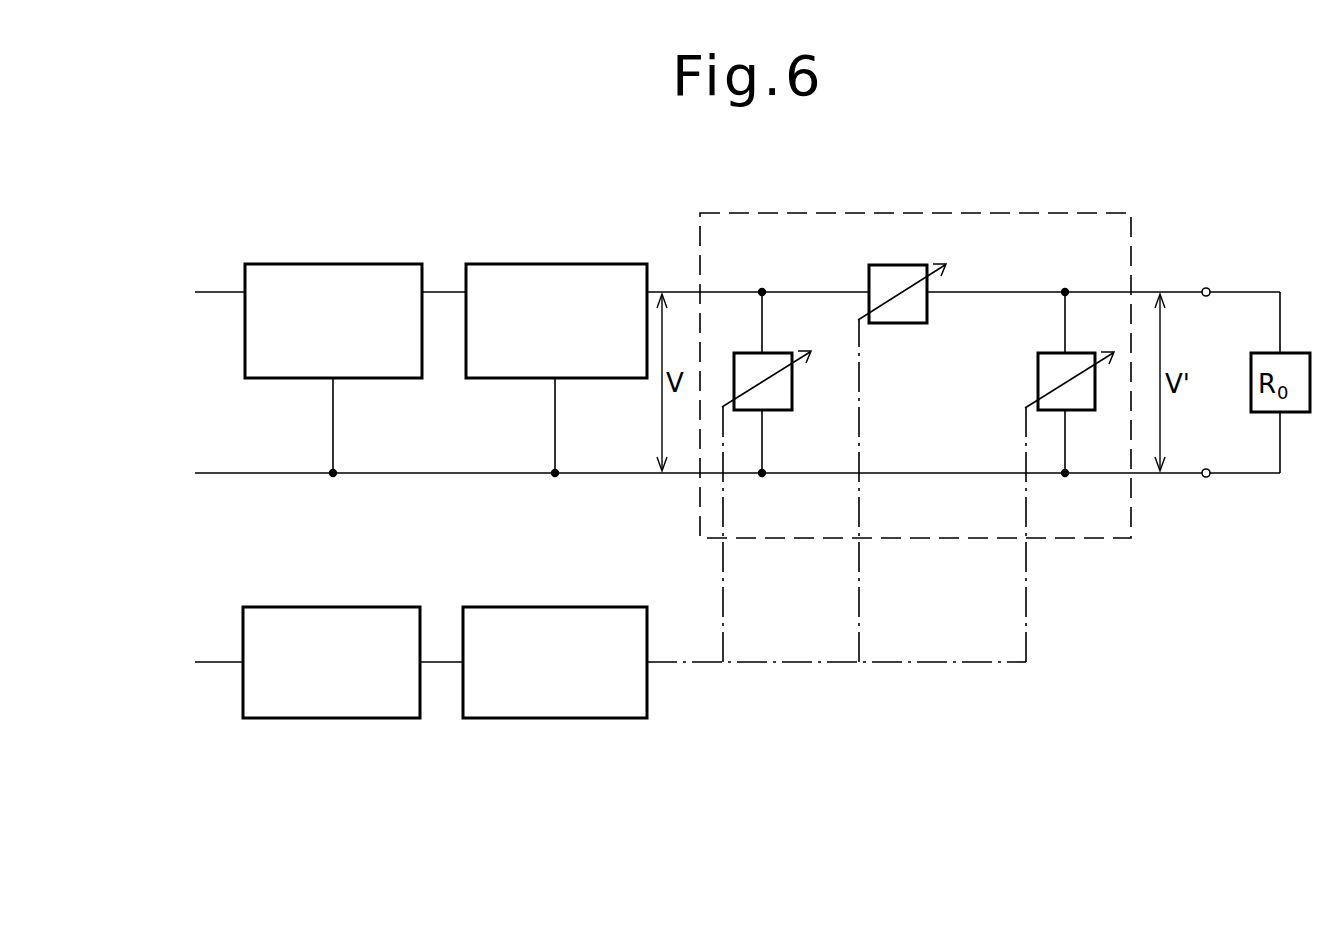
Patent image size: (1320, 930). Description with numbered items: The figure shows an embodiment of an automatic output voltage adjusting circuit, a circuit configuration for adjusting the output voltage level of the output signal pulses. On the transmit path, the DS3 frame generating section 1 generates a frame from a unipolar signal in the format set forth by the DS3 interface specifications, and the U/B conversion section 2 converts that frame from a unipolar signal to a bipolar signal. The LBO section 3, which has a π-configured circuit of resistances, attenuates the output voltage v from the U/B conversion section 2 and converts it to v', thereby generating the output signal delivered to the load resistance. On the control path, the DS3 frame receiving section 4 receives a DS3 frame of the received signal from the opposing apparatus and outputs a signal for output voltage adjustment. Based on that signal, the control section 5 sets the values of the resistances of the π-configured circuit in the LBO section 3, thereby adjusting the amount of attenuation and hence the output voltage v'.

The DS3 frame generating section 1 is at (412, 264).
The U/B conversion section 2 is at (635, 264).
The LBO section 3 is at (1103, 213).
The DS3 frame receiving section 4 is at (410, 607).
The control section 5 is at (634, 607).